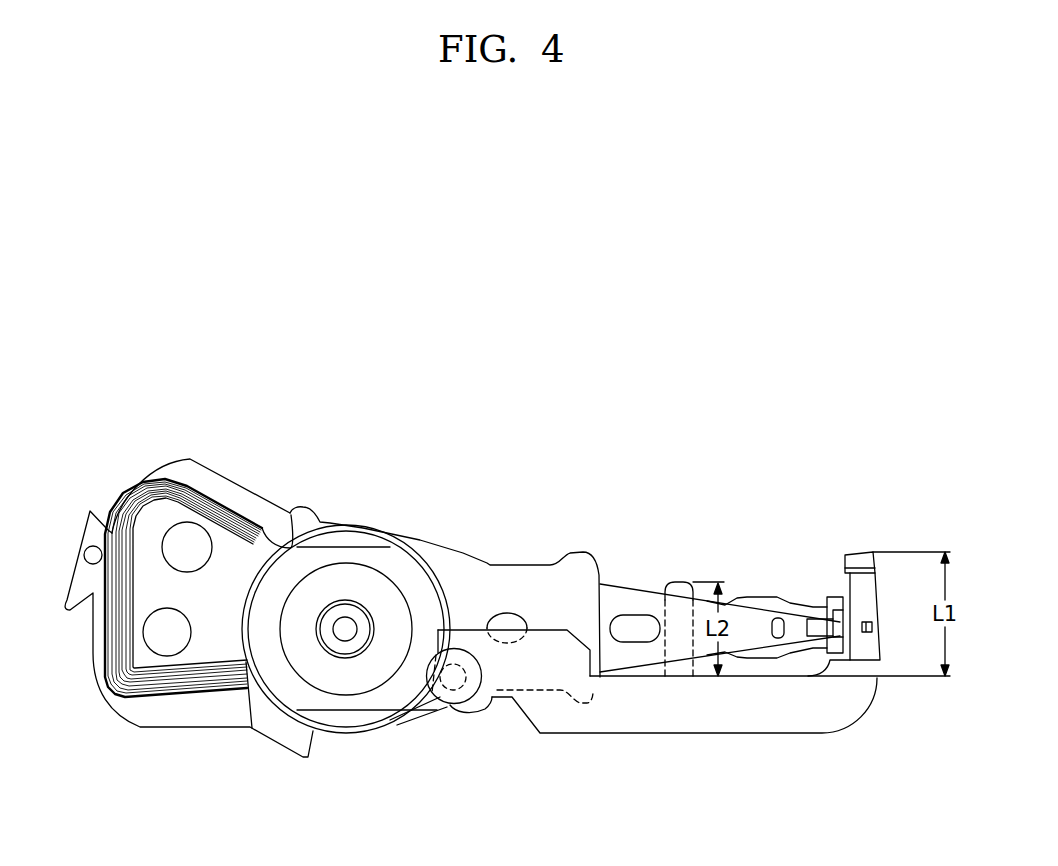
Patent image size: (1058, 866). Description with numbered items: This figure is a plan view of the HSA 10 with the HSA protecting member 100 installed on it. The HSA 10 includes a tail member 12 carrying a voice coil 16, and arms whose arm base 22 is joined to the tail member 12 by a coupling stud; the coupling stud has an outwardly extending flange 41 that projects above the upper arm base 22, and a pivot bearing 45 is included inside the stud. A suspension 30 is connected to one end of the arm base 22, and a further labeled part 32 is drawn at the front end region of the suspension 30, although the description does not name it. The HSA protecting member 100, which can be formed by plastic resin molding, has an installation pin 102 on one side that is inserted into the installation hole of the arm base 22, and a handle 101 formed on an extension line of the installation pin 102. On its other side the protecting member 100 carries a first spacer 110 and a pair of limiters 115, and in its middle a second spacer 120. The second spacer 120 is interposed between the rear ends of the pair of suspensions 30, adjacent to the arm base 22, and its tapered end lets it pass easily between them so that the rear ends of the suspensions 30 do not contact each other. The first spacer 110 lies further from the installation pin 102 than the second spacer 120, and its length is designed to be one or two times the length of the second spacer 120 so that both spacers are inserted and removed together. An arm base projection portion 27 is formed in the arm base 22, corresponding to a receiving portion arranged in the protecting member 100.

The HSA 10 is at (529, 524).
The tail member 12 is at (95, 685).
The voice coil 16 is at (148, 507).
The arm base 22 is at (463, 555).
The arm base projection portion 27 is at (590, 703).
The suspension 30 is at (760, 612).
The pin 32 is at (860, 632).
The flange 41 is at (327, 558).
The pivot bearing 45 is at (370, 590).
The HSA protecting member 100 is at (743, 752).
The handle 101 is at (460, 697).
The installation pin 102 is at (443, 677).
The first spacer 110 is at (840, 600).
The limiter 115 is at (878, 587).
The second spacer 120 is at (678, 580).